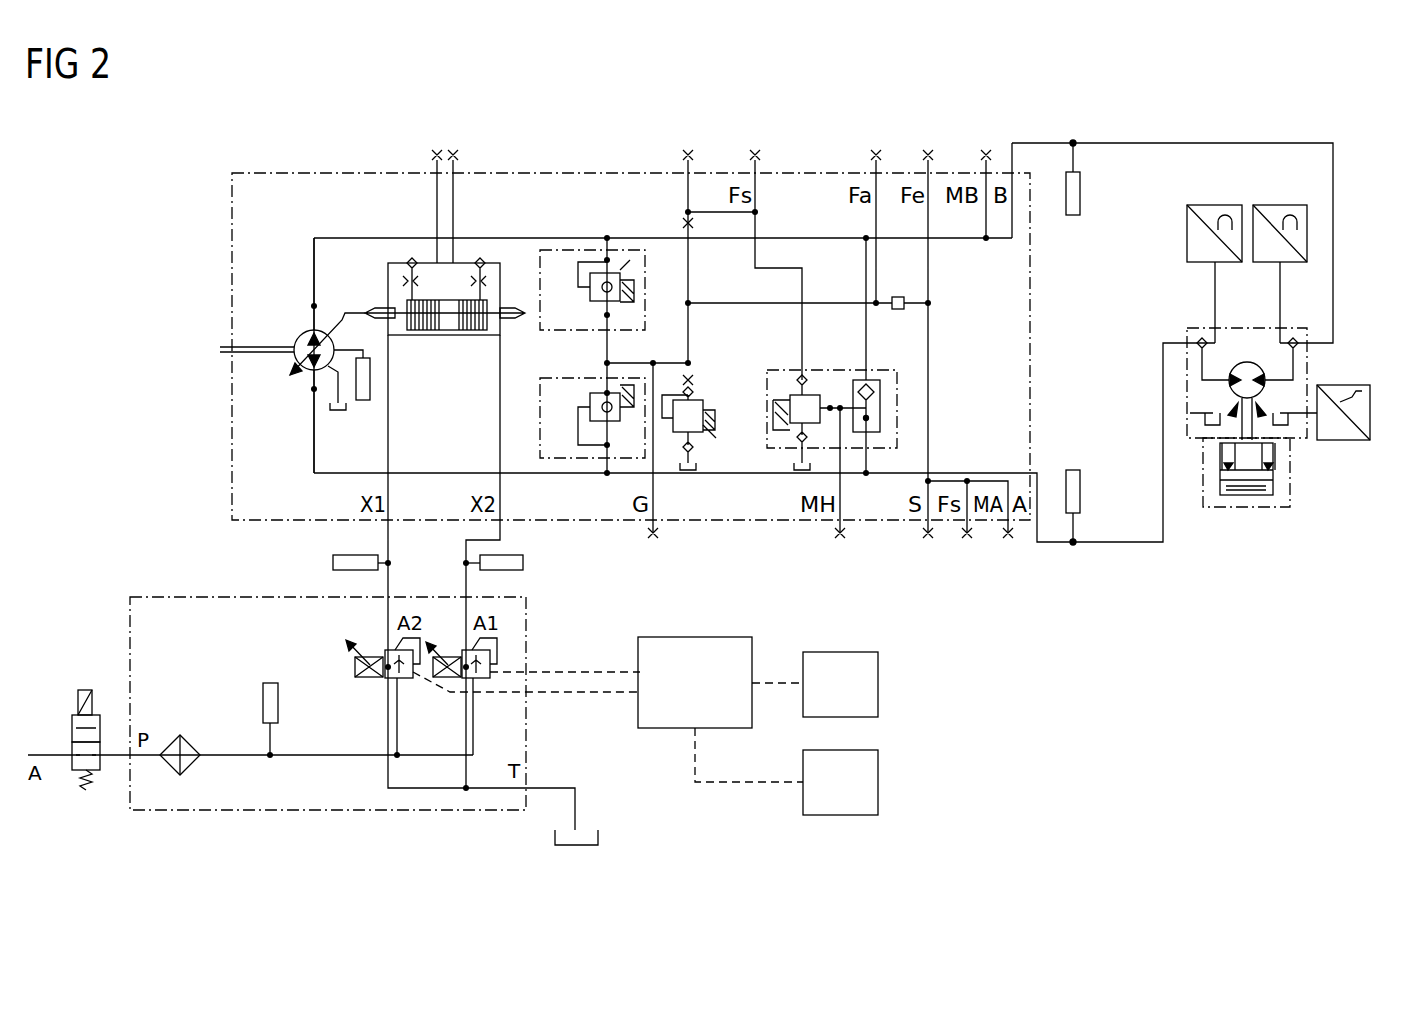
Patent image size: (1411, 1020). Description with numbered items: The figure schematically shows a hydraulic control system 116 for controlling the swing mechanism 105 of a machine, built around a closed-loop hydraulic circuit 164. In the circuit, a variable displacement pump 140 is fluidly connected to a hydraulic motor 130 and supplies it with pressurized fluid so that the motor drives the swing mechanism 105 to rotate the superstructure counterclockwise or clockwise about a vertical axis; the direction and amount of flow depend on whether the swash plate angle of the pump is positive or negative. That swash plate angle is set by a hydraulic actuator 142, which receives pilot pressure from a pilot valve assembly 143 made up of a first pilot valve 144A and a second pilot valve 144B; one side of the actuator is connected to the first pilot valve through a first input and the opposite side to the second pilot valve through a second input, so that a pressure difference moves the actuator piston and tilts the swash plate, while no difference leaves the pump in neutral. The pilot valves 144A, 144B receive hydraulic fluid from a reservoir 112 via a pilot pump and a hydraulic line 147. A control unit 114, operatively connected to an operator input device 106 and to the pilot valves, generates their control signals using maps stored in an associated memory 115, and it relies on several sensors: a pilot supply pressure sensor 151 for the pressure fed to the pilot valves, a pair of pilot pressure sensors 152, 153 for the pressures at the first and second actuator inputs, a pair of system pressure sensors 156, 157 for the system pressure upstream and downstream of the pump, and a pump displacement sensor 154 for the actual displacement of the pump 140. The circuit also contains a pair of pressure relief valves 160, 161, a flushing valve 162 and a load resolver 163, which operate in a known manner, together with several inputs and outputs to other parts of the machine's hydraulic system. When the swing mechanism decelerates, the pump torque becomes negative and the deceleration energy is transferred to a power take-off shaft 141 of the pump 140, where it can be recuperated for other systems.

The swing mechanism 105 is at (1318, 468).
The input device 106 is at (880, 783).
The reservoir 112 is at (560, 845).
The control unit 114 is at (695, 637).
The memory 115 is at (880, 683).
The hydraulic control system 116 is at (1097, 617).
The hydraulic motor 130 is at (1248, 360).
The variable displacement pump 140 is at (300, 334).
The power take-off shaft 141 is at (267, 355).
The hydraulic actuator 142 is at (443, 330).
The pilot valve assembly 143 is at (313, 812).
The first pilot valve 144A is at (358, 688).
The second pilot valve 144B is at (520, 632).
The hydraulic line 147 is at (220, 753).
The pilot supply pressure sensor 151 is at (268, 683).
The pilot pressure sensor 152 is at (333, 563).
The pilot pressure sensor 153 is at (523, 563).
The pump displacement sensor 154 is at (365, 400).
The system pressure sensor 156 is at (1082, 486).
The system pressure sensor 157 is at (1082, 196).
The pressure relief valve 160 is at (565, 250).
The pressure relief valve 161 is at (540, 440).
The flushing valve 162 is at (712, 395).
The load resolver 163 is at (900, 416).
The closed-loop hydraulic circuit 164 is at (1168, 143).